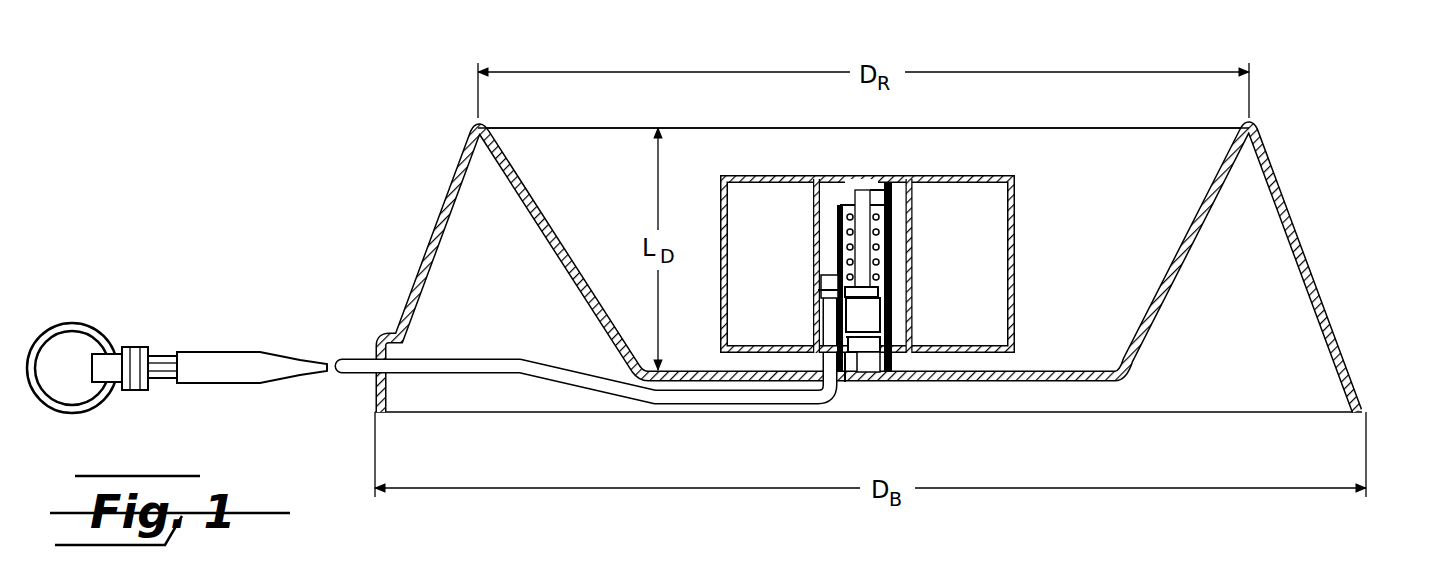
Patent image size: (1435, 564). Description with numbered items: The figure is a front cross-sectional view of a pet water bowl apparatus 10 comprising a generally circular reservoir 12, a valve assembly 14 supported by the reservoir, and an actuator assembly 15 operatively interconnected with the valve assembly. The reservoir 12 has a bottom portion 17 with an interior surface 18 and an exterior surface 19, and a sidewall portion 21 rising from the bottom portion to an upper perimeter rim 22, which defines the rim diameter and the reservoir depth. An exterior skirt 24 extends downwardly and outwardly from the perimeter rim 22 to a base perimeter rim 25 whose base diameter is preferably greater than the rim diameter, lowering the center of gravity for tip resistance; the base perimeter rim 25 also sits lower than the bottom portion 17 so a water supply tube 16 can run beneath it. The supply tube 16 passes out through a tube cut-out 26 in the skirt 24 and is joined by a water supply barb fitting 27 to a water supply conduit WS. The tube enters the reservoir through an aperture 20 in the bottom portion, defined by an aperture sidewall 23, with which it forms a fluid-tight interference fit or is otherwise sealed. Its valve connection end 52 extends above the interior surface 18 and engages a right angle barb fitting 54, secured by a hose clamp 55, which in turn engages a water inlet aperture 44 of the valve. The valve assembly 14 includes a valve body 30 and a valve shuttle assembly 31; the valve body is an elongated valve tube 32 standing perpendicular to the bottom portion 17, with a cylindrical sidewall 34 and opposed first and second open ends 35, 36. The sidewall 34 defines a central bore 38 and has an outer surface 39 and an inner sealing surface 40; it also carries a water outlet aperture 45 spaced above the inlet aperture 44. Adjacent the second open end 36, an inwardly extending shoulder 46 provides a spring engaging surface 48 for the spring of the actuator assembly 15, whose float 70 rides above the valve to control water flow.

The apparatus 10 is at (400, 128).
The reservoir 12 is at (1295, 204).
The valve assembly 14 is at (898, 233).
The actuator assembly 15 is at (863, 173).
The water supply tube 16 is at (772, 405).
The bottom portion 17 is at (1061, 385).
The interior surface 18 is at (1063, 365).
The exterior surface 19 is at (993, 383).
The aperture 20 is at (840, 400).
The sidewall portion 21 is at (1174, 252).
The upper perimeter rim 22 is at (1252, 125).
The aperture sidewall 23 is at (850, 383).
The exterior skirt 24 is at (1304, 245).
The base perimeter rim 25 is at (1362, 406).
The tube cut-out 26 is at (363, 357).
The water supply barb fitting 27 is at (163, 348).
The valve body 30 is at (897, 278).
The valve shuttle assembly 31 is at (886, 345).
The elongated valve tube 32 is at (895, 318).
The cylindrical sidewall 34 is at (897, 322).
The first open end 35 is at (898, 373).
The second open end 36 is at (843, 205).
The valve body central bore 38 is at (875, 382).
The outer surface 39 is at (833, 240).
The inner sealing surface 40 is at (857, 383).
The water inlet aperture 44 is at (836, 270).
The water outlet aperture 45 is at (905, 267).
The shoulder 46 is at (884, 193).
The spring engaging surface 48 is at (838, 220).
The valve connection end 52 is at (815, 333).
The right angle barb fitting 54 is at (815, 293).
The hose clamp 55 is at (820, 320).
The float 70 is at (1016, 180).
The water supply conduit WS is at (95, 317).